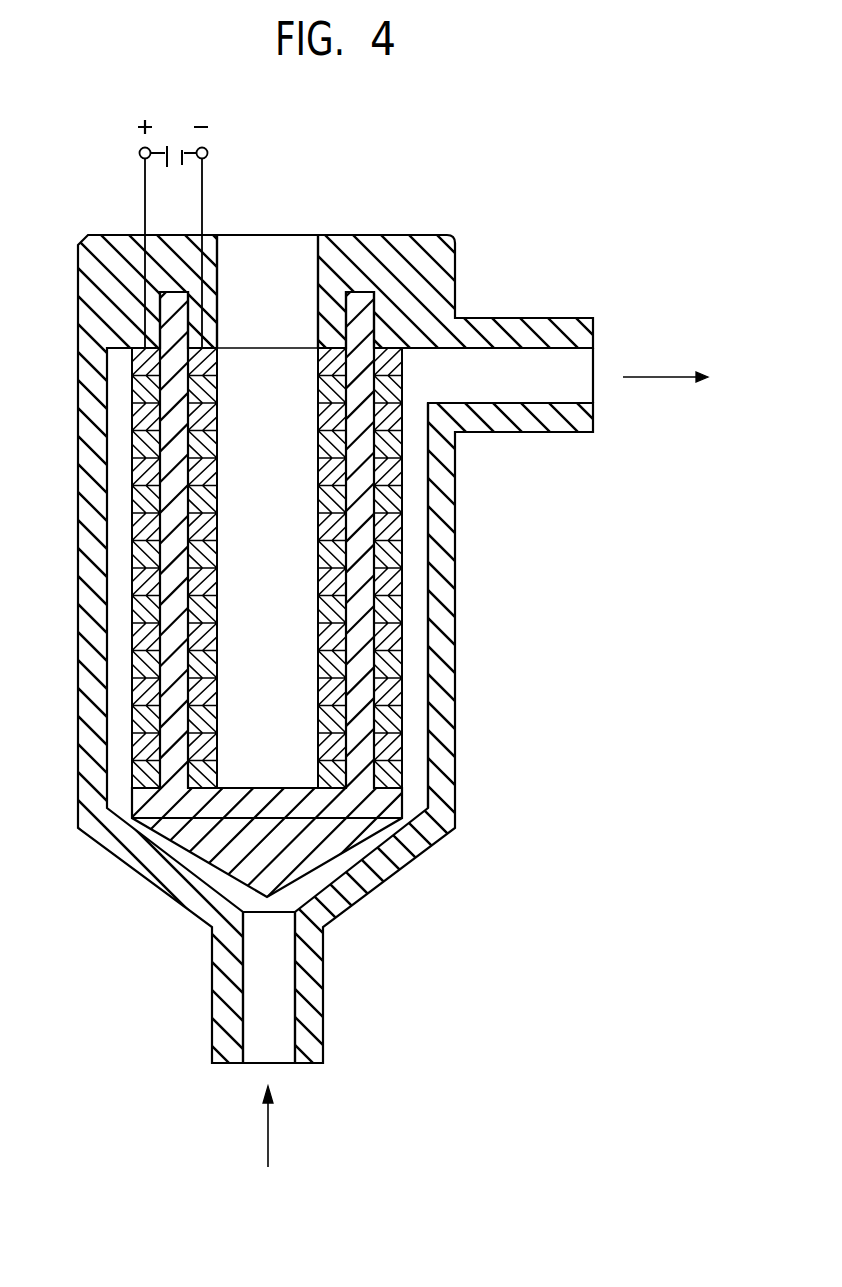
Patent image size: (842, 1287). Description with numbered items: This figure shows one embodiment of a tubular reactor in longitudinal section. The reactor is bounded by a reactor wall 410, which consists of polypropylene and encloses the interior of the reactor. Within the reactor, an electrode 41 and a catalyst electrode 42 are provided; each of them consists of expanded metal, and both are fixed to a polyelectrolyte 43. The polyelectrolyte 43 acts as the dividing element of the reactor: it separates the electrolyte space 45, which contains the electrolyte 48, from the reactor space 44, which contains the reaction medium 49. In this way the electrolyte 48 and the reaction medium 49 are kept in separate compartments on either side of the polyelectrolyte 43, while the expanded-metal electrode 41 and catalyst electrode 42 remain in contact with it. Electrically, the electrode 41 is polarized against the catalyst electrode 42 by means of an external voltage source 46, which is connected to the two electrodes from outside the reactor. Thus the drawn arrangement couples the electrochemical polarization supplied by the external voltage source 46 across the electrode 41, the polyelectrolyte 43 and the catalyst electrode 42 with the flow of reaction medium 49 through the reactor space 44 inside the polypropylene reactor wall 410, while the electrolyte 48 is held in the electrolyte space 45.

The electrode 41 is at (400, 646).
The catalyst electrode 42 is at (355, 479).
The polyelectrolyte 43 is at (363, 575).
The reactor space 44 is at (418, 772).
The electrolyte space 45 is at (290, 703).
The external voltage source 46 is at (175, 166).
The electrolyte 48 is at (269, 226).
The reaction medium 49 is at (272, 1147).
The reactor wall 410 is at (447, 253).